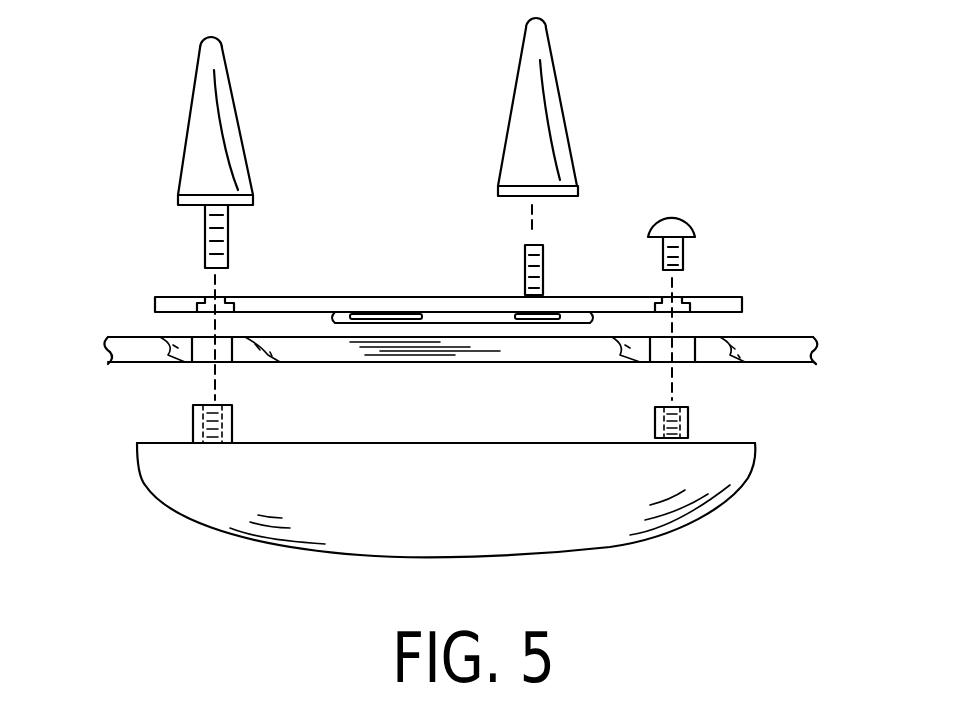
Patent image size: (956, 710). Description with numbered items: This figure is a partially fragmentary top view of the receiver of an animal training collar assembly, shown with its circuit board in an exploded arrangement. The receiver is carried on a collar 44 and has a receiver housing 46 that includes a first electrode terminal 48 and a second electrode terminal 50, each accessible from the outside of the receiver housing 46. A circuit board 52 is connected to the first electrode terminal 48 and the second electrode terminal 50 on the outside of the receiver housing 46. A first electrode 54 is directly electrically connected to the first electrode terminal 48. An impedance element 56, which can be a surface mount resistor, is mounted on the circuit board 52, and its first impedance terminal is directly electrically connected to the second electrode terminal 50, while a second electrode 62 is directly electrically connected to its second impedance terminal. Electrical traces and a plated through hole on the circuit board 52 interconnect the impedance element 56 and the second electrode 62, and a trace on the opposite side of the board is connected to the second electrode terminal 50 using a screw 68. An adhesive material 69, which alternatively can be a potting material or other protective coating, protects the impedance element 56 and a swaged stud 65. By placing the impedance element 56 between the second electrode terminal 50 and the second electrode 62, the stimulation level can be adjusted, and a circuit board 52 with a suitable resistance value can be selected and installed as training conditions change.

The collar 44 is at (768, 338).
The receiver housing 46 is at (207, 492).
The first electrode terminal 48 is at (193, 415).
The second electrode terminal 50 is at (688, 422).
The circuit board 52 is at (175, 305).
The first electrode 54 is at (218, 70).
The impedance element 56 is at (378, 317).
The second electrode 62 is at (540, 60).
The swaged stud 65 is at (547, 250).
The screw 68 is at (688, 222).
The adhesive material 69 is at (465, 318).